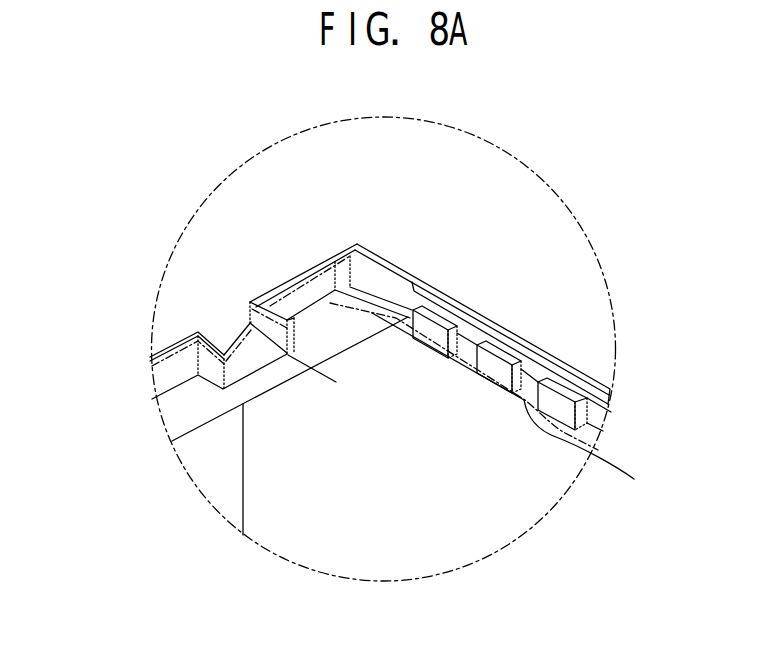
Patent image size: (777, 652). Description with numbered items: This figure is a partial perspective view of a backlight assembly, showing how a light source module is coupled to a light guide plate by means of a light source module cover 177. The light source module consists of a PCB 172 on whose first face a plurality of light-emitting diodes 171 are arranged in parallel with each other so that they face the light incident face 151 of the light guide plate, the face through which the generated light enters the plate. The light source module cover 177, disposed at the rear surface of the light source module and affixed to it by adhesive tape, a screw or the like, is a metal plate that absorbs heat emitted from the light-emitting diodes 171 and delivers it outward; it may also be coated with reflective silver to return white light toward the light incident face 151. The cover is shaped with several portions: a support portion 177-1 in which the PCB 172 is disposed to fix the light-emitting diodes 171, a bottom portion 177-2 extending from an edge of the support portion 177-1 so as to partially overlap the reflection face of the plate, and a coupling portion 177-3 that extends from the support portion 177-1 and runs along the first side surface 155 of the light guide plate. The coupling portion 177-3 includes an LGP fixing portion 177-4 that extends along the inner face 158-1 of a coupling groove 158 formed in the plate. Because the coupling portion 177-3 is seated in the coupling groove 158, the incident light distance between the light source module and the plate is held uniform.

The light incident face 151 is at (520, 404).
The first side surface 155 is at (160, 354).
The coupling groove 158 is at (240, 321).
The inner face of coupling groove 158-1 is at (236, 345).
The light-emitting diodes 171 is at (440, 318).
The PCB 172 is at (380, 257).
The light source module cover 177 is at (551, 357).
The support portion 177-1 is at (505, 326).
The bottom portion 177-2 is at (458, 537).
The coupling portion 177-3 is at (335, 256).
The LGP fixing portion 177-4 is at (172, 441).